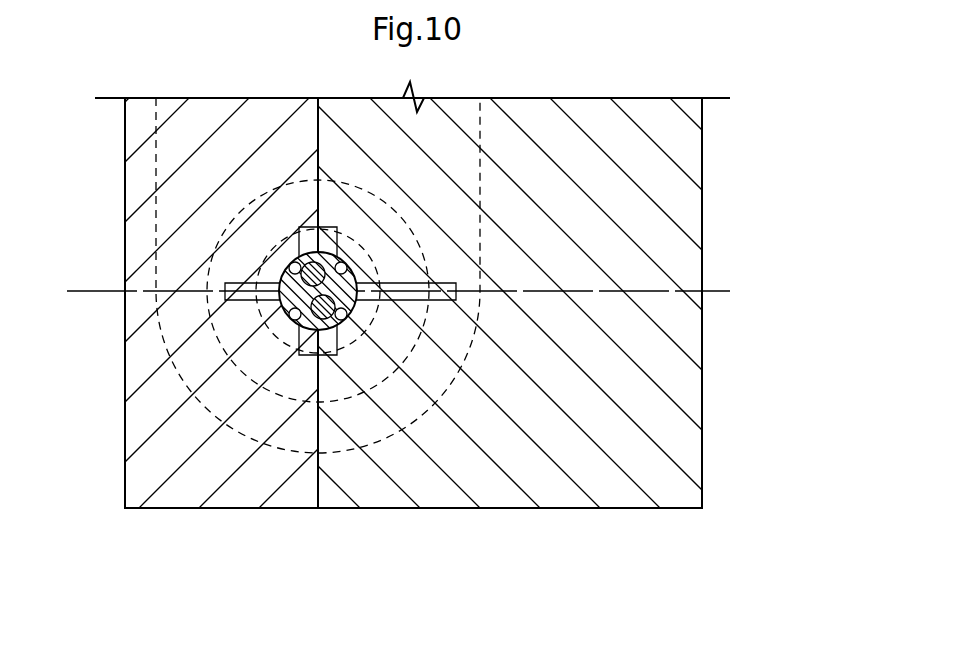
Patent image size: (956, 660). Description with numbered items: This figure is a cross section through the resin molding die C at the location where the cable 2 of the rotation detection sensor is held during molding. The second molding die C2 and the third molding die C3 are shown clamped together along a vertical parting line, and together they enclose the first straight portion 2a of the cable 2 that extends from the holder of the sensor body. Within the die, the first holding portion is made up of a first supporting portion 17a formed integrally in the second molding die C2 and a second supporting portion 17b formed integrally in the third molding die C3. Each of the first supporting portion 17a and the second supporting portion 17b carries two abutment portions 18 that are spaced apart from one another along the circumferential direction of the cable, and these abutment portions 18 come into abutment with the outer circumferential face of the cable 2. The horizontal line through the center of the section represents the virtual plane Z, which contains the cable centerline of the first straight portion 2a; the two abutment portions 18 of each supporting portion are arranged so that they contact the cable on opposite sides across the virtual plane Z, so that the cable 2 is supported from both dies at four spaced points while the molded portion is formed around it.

The cable 2 is at (345, 285).
The first straight portion 2a is at (345, 285).
The first supporting portion 17a is at (343, 268).
The second supporting portion 17b is at (290, 268).
The abutment portions 18 is at (318, 250).
The resin molding die C is at (478, 332).
The second molding die C2 is at (628, 509).
The third molding die C3 is at (195, 509).
The virtual plane Z is at (389, 293).